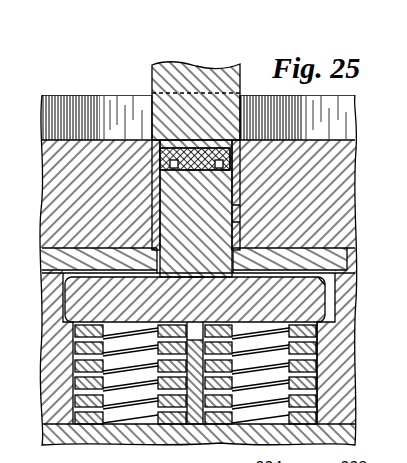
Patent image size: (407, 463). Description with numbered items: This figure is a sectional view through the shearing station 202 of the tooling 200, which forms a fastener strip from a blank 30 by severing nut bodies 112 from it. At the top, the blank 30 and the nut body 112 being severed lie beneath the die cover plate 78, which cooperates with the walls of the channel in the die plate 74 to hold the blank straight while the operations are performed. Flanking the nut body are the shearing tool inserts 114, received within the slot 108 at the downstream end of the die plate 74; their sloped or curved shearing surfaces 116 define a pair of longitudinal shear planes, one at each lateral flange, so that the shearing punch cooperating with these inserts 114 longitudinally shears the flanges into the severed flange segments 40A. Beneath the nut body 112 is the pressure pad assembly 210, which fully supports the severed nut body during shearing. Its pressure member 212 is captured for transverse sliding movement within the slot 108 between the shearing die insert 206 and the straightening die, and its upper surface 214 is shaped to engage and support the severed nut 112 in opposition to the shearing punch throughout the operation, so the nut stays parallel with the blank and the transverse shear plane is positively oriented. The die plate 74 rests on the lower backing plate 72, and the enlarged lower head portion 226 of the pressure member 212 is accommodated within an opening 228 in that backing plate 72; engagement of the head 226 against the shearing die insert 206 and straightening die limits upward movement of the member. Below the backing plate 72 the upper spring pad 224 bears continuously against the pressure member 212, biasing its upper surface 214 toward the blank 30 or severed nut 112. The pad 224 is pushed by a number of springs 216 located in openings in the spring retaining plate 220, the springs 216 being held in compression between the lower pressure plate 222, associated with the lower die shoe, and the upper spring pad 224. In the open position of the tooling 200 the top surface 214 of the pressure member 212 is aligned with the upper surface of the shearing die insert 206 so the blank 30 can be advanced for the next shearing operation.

The tooling 200 is at (66, 81).
The shearing station 202 is at (131, 68).
The blank 30 is at (152, 92).
The nut body 112 is at (200, 148).
The die cover plate 78 is at (352, 115).
The severed flange segments 40A is at (152, 138).
The shearing surfaces 116 is at (160, 158).
The shearing tool inserts 114 is at (152, 185).
The upper surface 214 is at (192, 172).
The pressure member 212 is at (158, 207).
The shearing die insert 206 is at (226, 168).
The slot 108 is at (236, 214).
The die plate 74 is at (352, 222).
The lower backing plate 72 is at (345, 262).
The upper spring pad 224 is at (70, 298).
The enlarged lower head portion 226 is at (197, 270).
The opening 228 is at (233, 272).
The pressure pad assembly 210 is at (360, 299).
The springs 216 is at (74, 330).
The spring retaining plate 220 is at (345, 384).
The lower pressure plate 222 is at (345, 433).